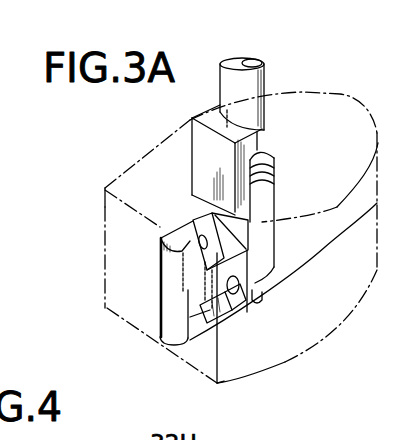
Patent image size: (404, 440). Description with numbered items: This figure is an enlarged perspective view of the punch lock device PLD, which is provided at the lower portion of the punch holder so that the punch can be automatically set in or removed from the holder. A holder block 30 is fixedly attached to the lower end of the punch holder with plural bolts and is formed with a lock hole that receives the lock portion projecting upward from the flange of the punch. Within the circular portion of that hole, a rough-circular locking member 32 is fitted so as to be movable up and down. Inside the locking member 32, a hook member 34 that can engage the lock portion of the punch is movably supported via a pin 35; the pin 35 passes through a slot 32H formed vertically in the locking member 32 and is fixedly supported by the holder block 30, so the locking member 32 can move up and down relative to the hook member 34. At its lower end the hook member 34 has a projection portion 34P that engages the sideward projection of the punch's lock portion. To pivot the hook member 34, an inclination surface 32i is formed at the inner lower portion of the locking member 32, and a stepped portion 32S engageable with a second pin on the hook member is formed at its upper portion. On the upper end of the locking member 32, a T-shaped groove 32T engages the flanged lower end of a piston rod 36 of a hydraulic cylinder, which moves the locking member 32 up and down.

The holder block 30 is at (190, 371).
The locking member 32 is at (160, 297).
The T-shaped groove 32T is at (192, 122).
The stepped portion 32S is at (160, 273).
The slot 32H is at (187, 303).
The inclination surface 32i is at (200, 336).
The hook member 34 is at (188, 233).
The projection portion 34P is at (239, 303).
The pin 35 is at (160, 238).
The piston rod 36 is at (252, 80).
The punch lock device PLD is at (87, 212).